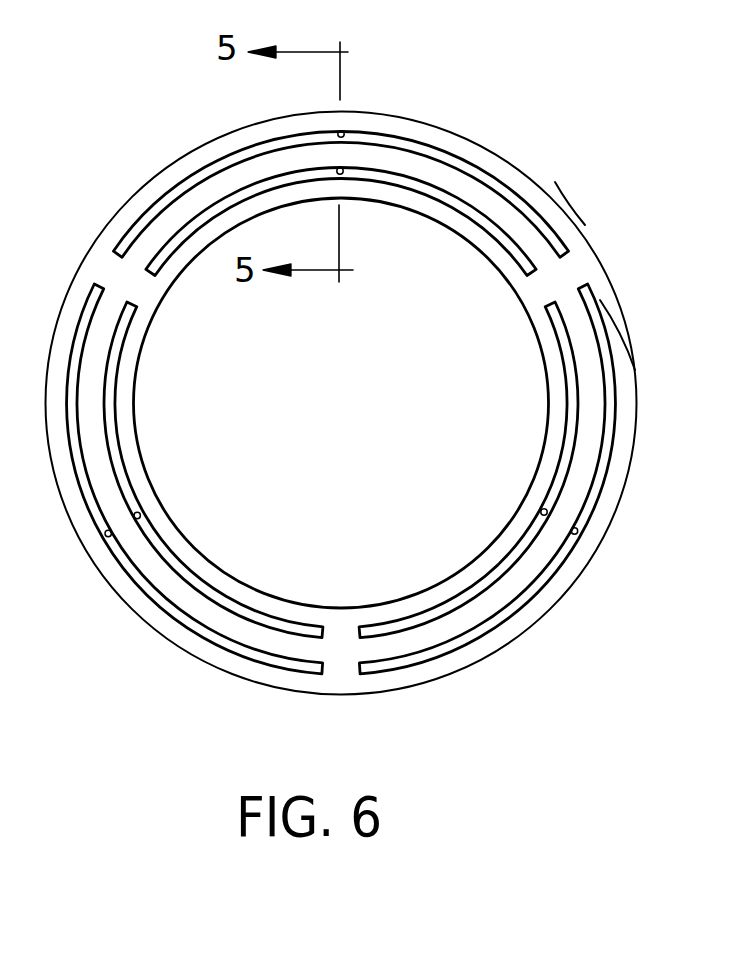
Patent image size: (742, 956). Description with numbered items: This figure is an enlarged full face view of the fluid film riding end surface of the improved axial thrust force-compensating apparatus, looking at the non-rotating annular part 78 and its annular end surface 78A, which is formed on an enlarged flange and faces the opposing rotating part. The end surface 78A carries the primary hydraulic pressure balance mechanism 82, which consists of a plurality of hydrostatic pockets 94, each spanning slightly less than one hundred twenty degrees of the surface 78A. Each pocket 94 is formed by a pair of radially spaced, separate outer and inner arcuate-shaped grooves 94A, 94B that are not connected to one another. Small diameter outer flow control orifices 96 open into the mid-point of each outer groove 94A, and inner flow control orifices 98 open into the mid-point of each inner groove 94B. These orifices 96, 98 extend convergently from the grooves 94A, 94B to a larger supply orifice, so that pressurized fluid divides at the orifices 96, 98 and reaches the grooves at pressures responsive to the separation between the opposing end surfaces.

The non-rotating annular part 78 is at (530, 167).
The annular end surface 78A is at (560, 217).
The primary hydraulic pressure balance mechanism 82 is at (614, 344).
The hydrostatic pocket 94 is at (515, 265).
The outer arcuate-shaped groove 94A is at (431, 144).
The inner arcuate-shaped groove 94B is at (470, 212).
The outer flow control orifice 96 is at (343, 131).
The inner flow control orifice 98 is at (341, 175).